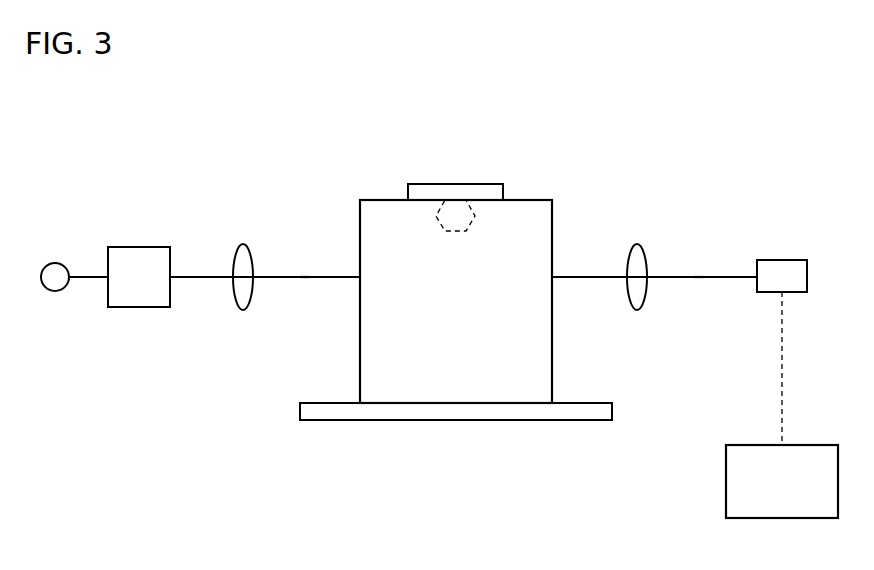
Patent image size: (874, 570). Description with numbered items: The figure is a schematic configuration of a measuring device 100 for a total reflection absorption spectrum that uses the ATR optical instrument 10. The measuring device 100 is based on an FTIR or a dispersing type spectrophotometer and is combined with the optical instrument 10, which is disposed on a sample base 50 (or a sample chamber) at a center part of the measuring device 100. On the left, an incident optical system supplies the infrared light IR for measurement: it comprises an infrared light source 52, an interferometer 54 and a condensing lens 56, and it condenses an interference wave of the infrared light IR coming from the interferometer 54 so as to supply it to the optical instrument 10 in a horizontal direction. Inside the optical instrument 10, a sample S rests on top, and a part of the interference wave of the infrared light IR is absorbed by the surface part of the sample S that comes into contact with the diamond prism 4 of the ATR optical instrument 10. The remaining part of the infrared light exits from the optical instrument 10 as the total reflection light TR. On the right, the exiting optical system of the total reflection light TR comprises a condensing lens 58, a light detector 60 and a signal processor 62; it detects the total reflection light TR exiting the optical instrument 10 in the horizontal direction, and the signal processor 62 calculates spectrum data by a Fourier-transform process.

The measuring device 100 is at (302, 140).
The infrared light source 52 is at (57, 261).
The interferometer 54 is at (139, 264).
The condensing lens 56 is at (245, 264).
The infrared light IR is at (305, 273).
The ATR optical instrument 10 is at (530, 200).
The sample S is at (477, 190).
The diamond prism 4 is at (468, 222).
The condensing lens 58 is at (639, 261).
The total reflection light TR is at (699, 273).
The light detector 60 is at (782, 261).
The signal processor 62 is at (783, 466).
The sample base 50 is at (325, 422).